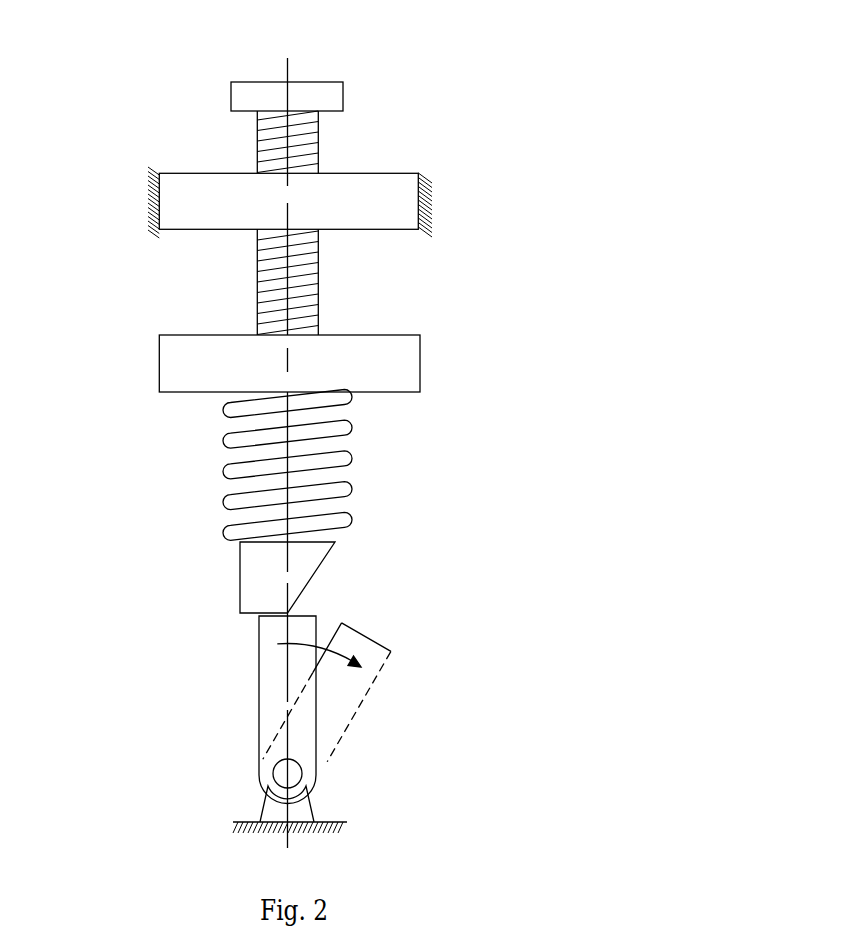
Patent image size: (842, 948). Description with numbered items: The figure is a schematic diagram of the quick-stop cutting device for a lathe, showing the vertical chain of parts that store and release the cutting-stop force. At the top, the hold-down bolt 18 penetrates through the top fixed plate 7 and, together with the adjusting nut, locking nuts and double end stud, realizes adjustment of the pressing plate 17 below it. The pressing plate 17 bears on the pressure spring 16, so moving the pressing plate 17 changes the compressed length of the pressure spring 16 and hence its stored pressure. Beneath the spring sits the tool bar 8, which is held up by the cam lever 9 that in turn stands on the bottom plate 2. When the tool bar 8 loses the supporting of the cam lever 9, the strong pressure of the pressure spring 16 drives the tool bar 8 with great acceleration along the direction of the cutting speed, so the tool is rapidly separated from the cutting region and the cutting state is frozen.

The hold-down bolt 18 is at (310, 98).
The top fixed plate 7 is at (370, 203).
The pressing plate 17 is at (377, 363).
The pressure spring 16 is at (255, 469).
The tool bar 8 is at (260, 575).
The cam lever 9 is at (275, 678).
The bottom plate 2 is at (270, 813).